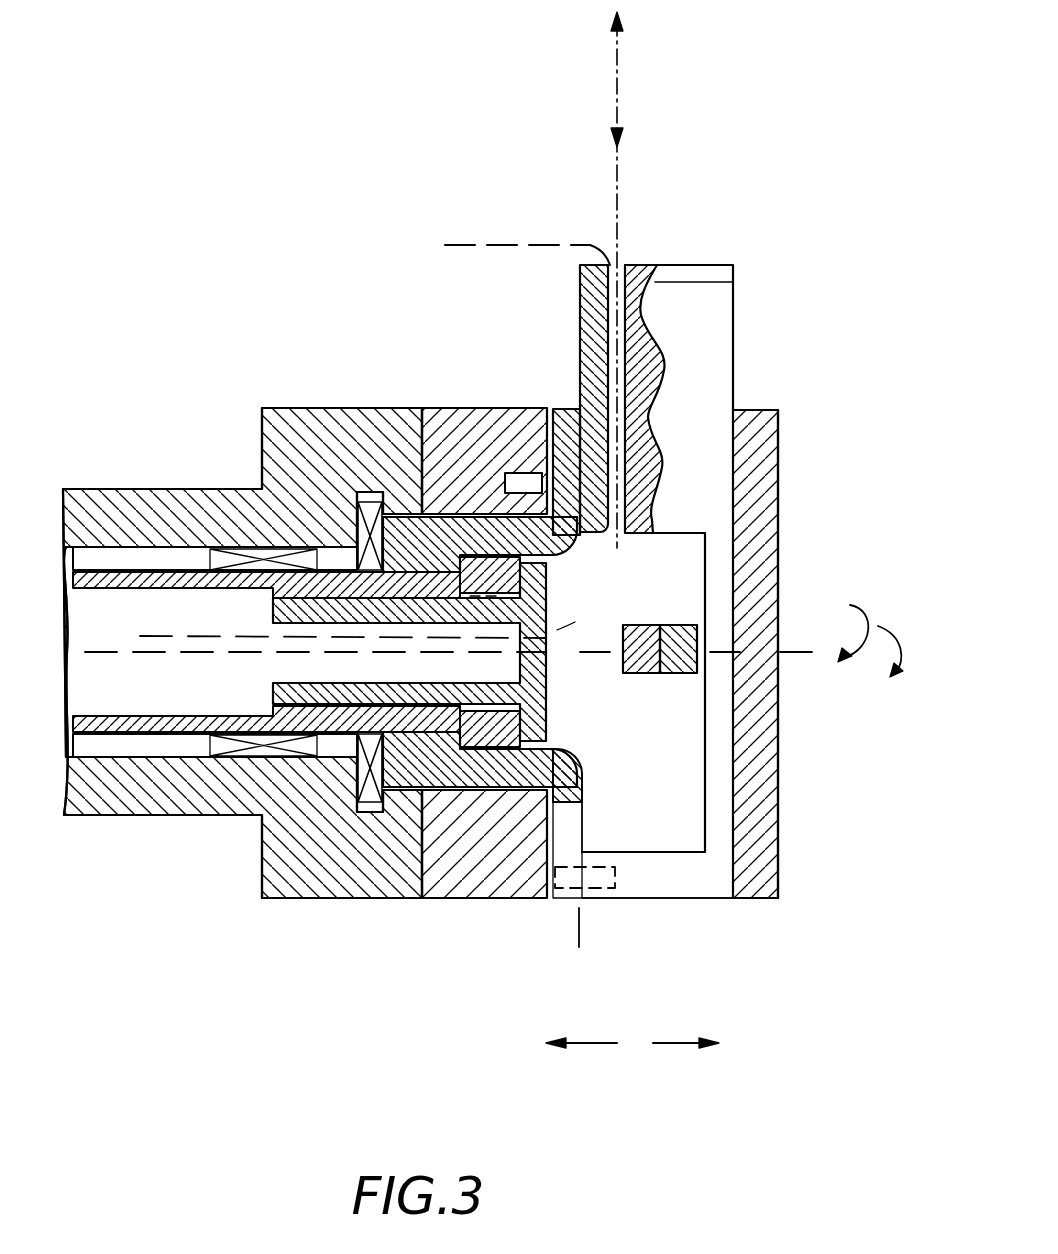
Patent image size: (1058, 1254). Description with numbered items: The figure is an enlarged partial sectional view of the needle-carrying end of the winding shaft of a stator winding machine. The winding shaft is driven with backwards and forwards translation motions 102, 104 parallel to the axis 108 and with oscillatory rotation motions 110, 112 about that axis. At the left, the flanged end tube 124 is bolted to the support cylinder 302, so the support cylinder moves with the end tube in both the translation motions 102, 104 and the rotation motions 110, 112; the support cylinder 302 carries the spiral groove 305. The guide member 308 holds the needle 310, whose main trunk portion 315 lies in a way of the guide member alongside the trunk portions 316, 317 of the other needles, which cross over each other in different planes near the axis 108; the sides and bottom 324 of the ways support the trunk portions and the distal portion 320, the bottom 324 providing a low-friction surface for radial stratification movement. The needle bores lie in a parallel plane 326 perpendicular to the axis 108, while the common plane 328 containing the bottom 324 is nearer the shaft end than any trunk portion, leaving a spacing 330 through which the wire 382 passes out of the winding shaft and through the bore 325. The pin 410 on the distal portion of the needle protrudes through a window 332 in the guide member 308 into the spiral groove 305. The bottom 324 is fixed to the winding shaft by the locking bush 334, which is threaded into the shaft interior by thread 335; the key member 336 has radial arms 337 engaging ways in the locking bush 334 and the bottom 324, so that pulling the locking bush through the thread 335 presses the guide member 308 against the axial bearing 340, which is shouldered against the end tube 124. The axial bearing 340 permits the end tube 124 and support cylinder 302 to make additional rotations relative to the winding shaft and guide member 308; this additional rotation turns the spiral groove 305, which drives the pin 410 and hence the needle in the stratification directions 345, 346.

The backwards translation motion 102 is at (597, 1045).
The forwards translation motion 104 is at (685, 1045).
The axis 108 is at (805, 655).
The oscillatory rotation motion 110 is at (842, 621).
The oscillatory rotation motion 112 is at (901, 628).
The end tube 124 is at (152, 805).
The support cylinder 302 is at (490, 900).
The spiral groove 305 is at (522, 482).
The guide member 308 is at (718, 547).
The needle 310 is at (722, 302).
The main trunk portion 315 is at (758, 533).
The main trunk portion 316 is at (678, 675).
The main trunk portion 317 is at (645, 675).
The distal portion 320 is at (658, 880).
The bottom 324 is at (567, 410).
The bore 325 is at (628, 262).
The parallel plane 326 is at (617, 218).
The common plane 328 is at (580, 930).
The spacing 330 is at (580, 640).
The window 332 is at (577, 818).
The locking bush 334 is at (546, 700).
The thread 335 is at (273, 705).
The key member 336 is at (548, 745).
The radial arm 337 is at (460, 685).
The axial bearing 340 is at (372, 520).
The stratification direction 345 is at (620, 50).
The stratification direction 346 is at (620, 105).
The wire 382 is at (592, 620).
The pin 410 is at (594, 850).